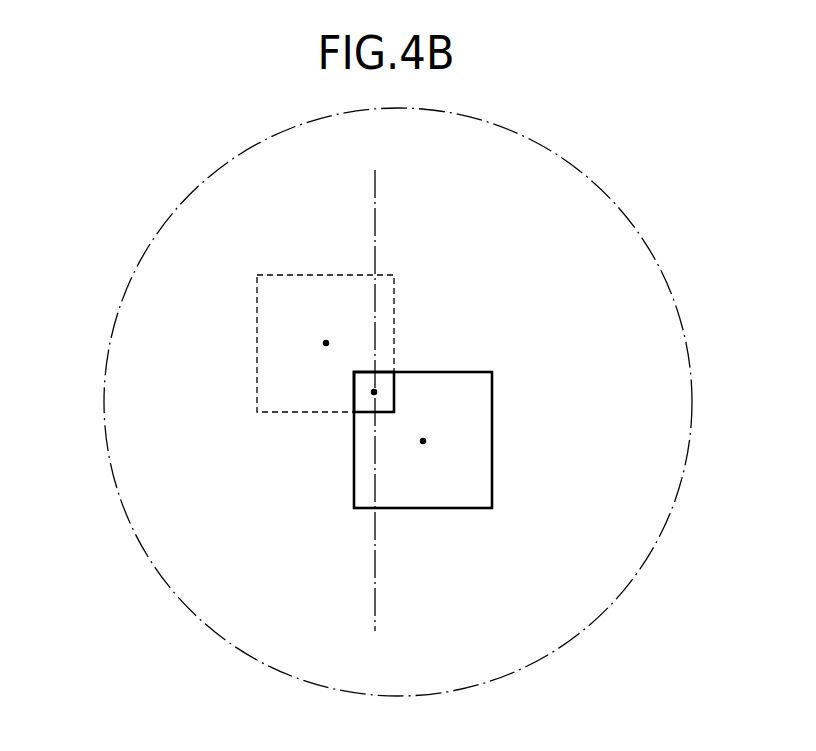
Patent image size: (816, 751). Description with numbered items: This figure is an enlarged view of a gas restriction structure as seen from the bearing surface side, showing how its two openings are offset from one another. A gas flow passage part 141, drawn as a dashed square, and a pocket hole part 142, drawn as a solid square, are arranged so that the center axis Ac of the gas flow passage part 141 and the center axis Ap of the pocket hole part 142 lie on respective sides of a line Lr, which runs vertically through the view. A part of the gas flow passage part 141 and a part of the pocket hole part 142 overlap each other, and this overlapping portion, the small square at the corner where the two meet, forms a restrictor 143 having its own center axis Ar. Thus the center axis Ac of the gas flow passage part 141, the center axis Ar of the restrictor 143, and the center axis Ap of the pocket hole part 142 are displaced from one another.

The gas flow passage part 141 is at (327, 275).
The pocket hole part 142 is at (492, 436).
The restrictor 143 is at (378, 384).
The line Lr is at (375, 388).
The center axis of the gas flow passage part Ac is at (326, 343).
The center axis of the restrictor Ar is at (374, 392).
The center axis of the pocket hole part Ap is at (423, 441).